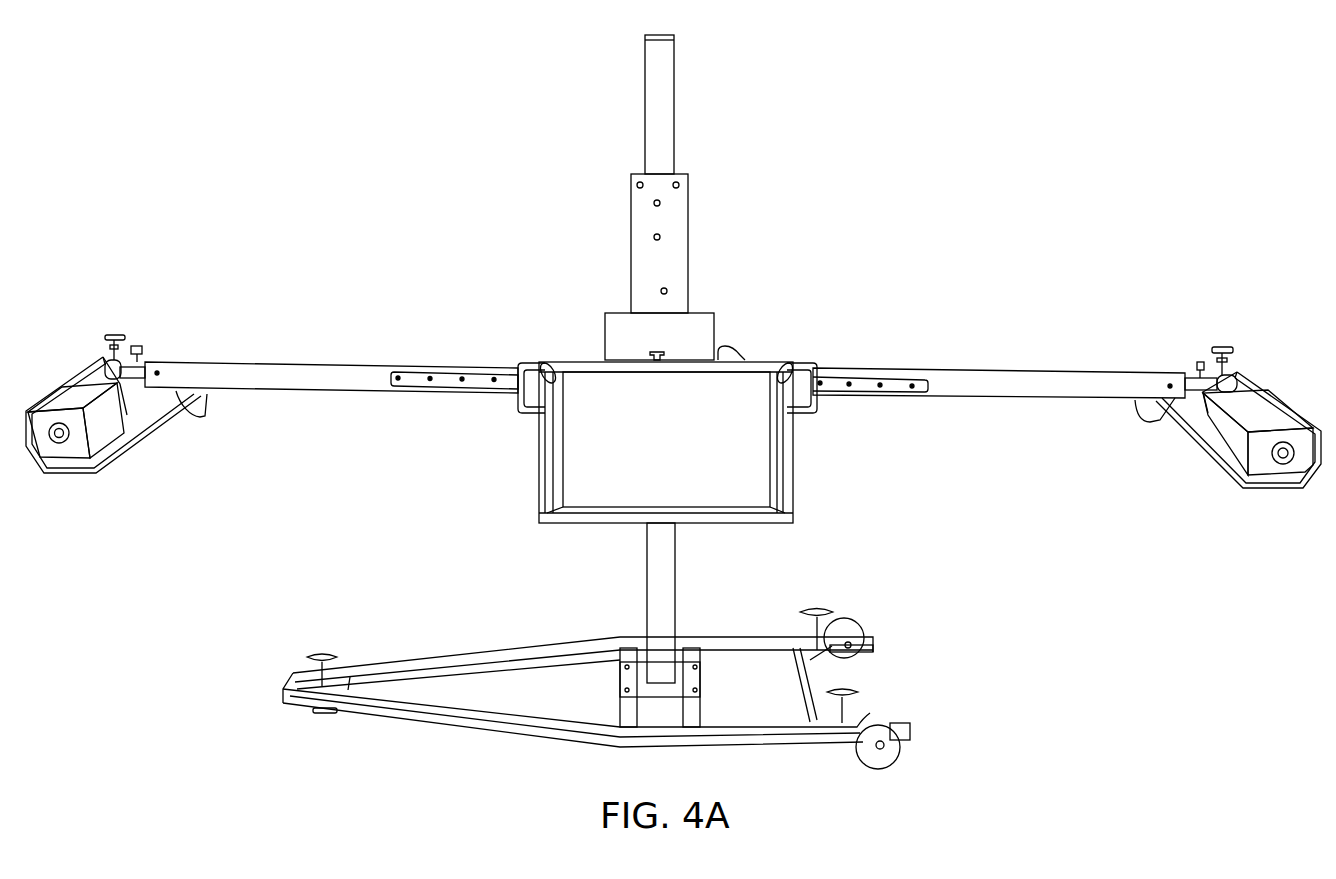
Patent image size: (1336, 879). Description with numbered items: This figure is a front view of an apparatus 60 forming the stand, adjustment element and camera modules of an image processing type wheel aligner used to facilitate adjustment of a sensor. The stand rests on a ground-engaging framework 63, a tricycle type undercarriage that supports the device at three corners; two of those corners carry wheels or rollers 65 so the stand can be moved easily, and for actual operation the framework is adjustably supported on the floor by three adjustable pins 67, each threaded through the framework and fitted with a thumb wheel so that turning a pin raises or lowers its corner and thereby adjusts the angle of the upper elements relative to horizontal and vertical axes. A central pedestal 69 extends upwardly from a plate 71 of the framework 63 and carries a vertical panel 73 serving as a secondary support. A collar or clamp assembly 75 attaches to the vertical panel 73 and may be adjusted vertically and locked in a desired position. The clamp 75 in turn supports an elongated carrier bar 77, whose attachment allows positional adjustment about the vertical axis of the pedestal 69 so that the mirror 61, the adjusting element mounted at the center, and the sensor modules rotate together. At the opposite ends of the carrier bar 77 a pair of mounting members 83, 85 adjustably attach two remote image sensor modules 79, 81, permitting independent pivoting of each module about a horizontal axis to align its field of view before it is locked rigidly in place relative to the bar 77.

The apparatus 60 is at (427, 246).
The mirror 61 is at (576, 473).
The ground-engaging framework 63 is at (468, 652).
The wheels or rollers 65 is at (858, 620).
The adjustable pins 67 is at (317, 652).
The central pedestal 69 is at (665, 572).
The plate 71 is at (697, 677).
The vertical panel 73 is at (689, 209).
The collar or clamp assembly 75 is at (704, 327).
The elongated carrier bar 77 is at (978, 371).
The remote image sensor module 79 is at (63, 386).
The remote image sensor module 81 is at (1222, 435).
The mounting member 83 is at (137, 346).
The mounting member 85 is at (1198, 360).